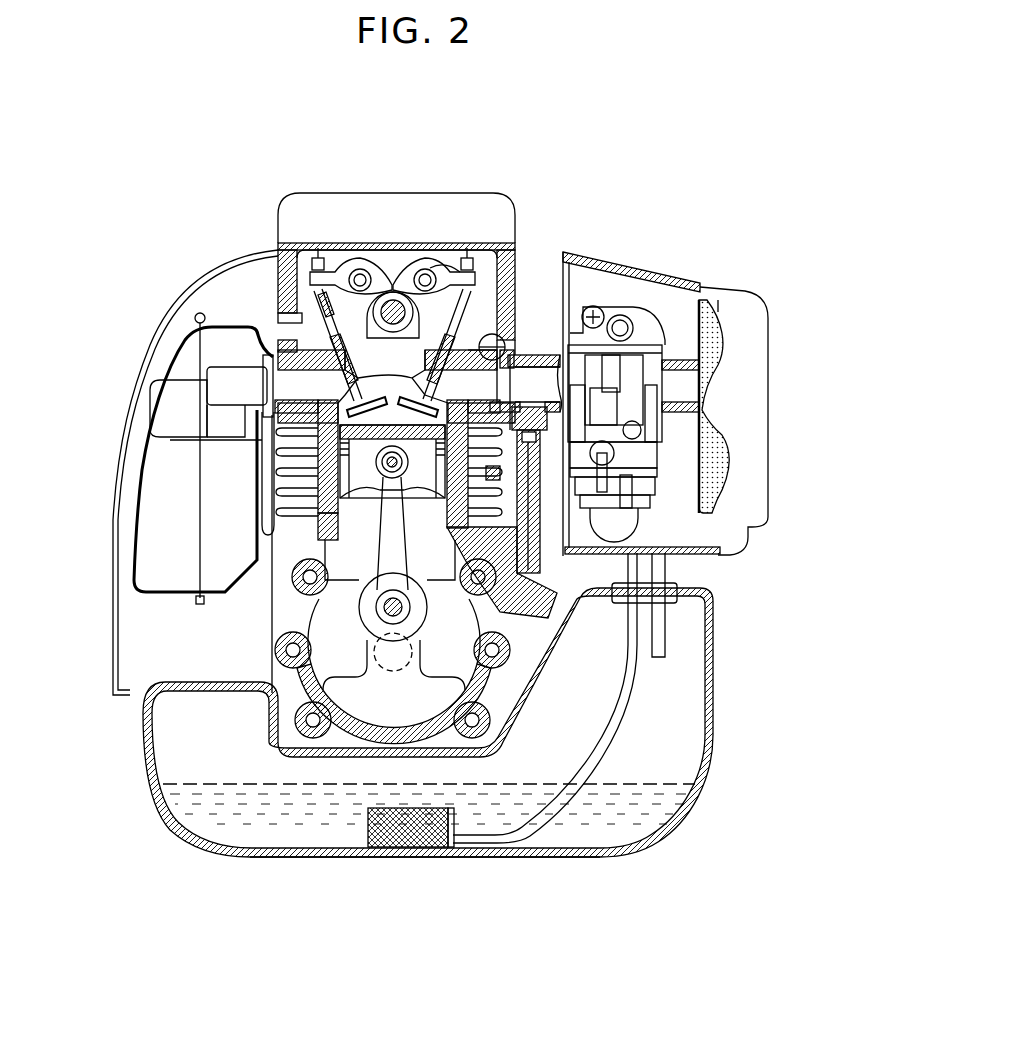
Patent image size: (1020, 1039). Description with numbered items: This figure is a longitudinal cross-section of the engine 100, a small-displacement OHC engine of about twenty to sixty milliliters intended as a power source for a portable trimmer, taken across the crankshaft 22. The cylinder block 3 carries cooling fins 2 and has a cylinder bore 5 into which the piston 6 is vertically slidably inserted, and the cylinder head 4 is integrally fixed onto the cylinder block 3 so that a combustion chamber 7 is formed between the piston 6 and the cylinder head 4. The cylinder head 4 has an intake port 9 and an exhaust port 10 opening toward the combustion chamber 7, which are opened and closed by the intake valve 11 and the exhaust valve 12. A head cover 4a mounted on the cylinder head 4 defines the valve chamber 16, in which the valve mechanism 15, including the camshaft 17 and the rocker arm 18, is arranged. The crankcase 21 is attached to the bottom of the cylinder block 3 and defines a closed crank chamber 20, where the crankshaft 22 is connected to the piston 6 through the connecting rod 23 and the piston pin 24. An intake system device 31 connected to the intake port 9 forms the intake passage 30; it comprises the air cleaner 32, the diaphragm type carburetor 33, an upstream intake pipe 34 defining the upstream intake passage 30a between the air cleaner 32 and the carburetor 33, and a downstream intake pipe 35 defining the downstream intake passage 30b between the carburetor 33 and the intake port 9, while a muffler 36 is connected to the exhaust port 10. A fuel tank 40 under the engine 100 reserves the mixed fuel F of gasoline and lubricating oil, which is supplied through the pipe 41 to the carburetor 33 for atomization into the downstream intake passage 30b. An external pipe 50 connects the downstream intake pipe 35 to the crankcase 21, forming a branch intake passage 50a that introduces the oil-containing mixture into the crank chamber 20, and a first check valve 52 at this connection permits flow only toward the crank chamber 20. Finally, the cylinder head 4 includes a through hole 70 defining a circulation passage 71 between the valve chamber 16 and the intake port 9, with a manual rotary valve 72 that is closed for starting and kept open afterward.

The engine 100 is at (256, 212).
The head cover 4a is at (320, 192).
The valve mechanism 15 is at (438, 150).
The camshaft 17 is at (391, 298).
The rocker arm 18 is at (408, 264).
The valve chamber 16 is at (478, 305).
The intake valve 11 is at (431, 345).
The intake port 9 is at (491, 334).
The cylinder head 4 is at (513, 277).
The through hole 70 is at (533, 378).
The circulation passage 71 is at (537, 384).
The manual rotary valve 72 is at (541, 362).
The intake passage 30 is at (567, 312).
The upstream intake passage 30a is at (727, 510).
The downstream intake passage 30b is at (631, 272).
The downstream intake pipe 35 is at (579, 304).
The diaphragm type carburetor 33 is at (616, 362).
The air cleaner 32 is at (696, 298).
The upstream intake pipe 34 is at (731, 557).
The intake system device 31 is at (750, 170).
The exhaust valve 12 is at (330, 318).
The exhaust port 10 is at (305, 382).
The combustion chamber 7 is at (310, 385).
The piston 6 is at (300, 432).
The piston pin 24 is at (387, 416).
The cylinder block 3 is at (385, 440).
The cooling fins 2 is at (382, 464).
The muffler 36 is at (162, 532).
The cylinder bore 5 is at (350, 533).
The connecting rod 23 is at (397, 548).
The crankcase 21 is at (320, 618).
The crank chamber 20 is at (338, 652).
The first check valve 52 is at (678, 596).
The branch intake passage 50a is at (556, 520).
The external pipe 50 is at (548, 470).
The crankshaft 22 is at (401, 607).
The mixed fuel F is at (681, 812).
The pipe 41 is at (594, 790).
The fuel tank 40 is at (297, 858).